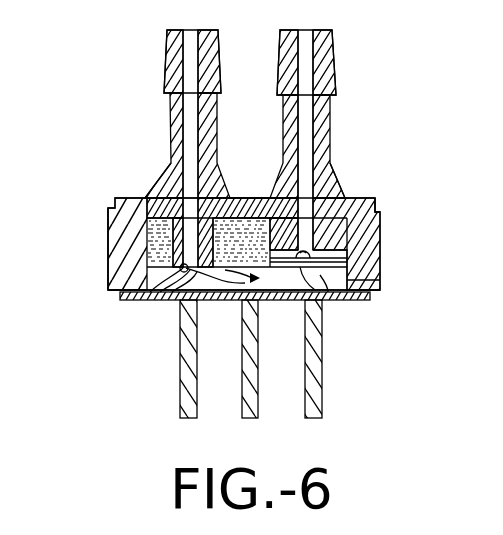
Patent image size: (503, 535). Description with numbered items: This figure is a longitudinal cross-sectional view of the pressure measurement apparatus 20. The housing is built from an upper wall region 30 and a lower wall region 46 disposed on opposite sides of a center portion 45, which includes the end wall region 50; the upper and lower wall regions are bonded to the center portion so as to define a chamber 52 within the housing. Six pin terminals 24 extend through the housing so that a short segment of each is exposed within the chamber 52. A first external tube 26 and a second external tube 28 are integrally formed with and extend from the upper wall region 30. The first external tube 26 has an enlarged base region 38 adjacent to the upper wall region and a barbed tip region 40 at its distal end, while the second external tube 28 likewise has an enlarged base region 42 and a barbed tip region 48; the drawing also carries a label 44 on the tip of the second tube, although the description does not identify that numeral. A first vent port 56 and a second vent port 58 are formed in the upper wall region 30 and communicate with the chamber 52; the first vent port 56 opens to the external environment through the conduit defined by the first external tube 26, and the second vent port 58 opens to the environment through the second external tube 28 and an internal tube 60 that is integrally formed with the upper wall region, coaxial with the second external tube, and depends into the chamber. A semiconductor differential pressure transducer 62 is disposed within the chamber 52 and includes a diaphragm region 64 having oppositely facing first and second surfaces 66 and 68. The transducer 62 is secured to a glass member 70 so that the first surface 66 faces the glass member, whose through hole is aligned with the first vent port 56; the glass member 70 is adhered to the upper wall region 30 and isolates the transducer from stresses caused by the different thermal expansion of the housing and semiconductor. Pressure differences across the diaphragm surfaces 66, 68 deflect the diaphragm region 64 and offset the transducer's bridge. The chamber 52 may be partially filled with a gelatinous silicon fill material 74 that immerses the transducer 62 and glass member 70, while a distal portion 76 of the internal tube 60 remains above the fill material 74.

The pressure measurement apparatus 20 is at (446, 155).
The pin terminals 24 is at (174, 387).
The first external tube 26 is at (330, 117).
The second external tube 28 is at (168, 122).
The upper wall region 30 is at (240, 190).
The enlarged base region 38 is at (308, 188).
The barbed tip region 40 is at (333, 57).
The enlarged base region 42 is at (170, 182).
The first tube collar 44 is at (167, 60).
The center portion 45 is at (405, 226).
The lower wall region 46 is at (372, 300).
The barbed tip region 48 is at (355, 262).
The end wall region 50 is at (108, 265).
The chamber 52 is at (224, 302).
The first vent port 56 is at (337, 178).
The second vent port 58 is at (190, 197).
The internal tube 60 is at (150, 300).
The semiconductor differential pressure transducer 62 is at (355, 253).
The diaphragm region 64 is at (382, 280).
The first surface 66 is at (292, 302).
The second surface 68 is at (327, 302).
The glass member 70 is at (382, 216).
The fill material 74 is at (170, 302).
The distal portion 76 is at (157, 300).